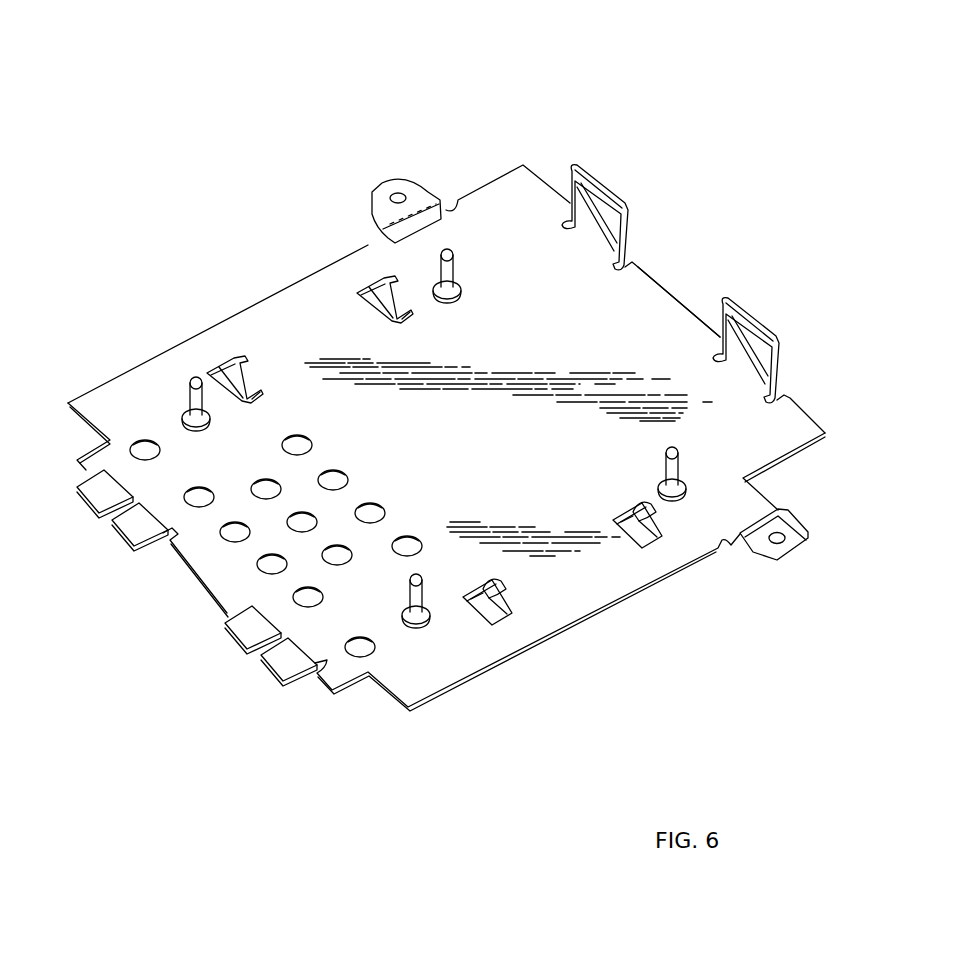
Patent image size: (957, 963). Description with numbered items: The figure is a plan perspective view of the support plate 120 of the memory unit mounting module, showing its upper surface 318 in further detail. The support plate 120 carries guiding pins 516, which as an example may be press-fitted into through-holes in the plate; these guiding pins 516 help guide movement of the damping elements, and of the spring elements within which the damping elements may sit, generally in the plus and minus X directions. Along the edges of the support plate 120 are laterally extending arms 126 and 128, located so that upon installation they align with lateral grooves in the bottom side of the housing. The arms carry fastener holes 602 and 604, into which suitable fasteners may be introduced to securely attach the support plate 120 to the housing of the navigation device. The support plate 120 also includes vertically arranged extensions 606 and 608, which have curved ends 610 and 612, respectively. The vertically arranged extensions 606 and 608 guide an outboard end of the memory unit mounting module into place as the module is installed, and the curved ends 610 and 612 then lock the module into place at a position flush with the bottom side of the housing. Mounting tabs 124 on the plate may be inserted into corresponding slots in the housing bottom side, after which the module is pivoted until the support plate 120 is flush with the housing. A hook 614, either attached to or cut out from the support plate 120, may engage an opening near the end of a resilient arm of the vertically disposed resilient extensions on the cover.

The upper surface 318 is at (515, 223).
The support plate 120 is at (648, 291).
The fastener hole 604 is at (392, 197).
The laterally extending arm 128 is at (417, 187).
The fastener hole 602 is at (785, 537).
The laterally extending arm 126 is at (767, 546).
The vertically arranged extension 606 is at (605, 232).
The curved end 610 is at (586, 170).
The vertically arranged extension 608 is at (773, 377).
The curved end 612 is at (752, 318).
The hook 614 is at (242, 360).
The guiding pin 516 is at (185, 408).
The mounting tab 124 is at (133, 525).